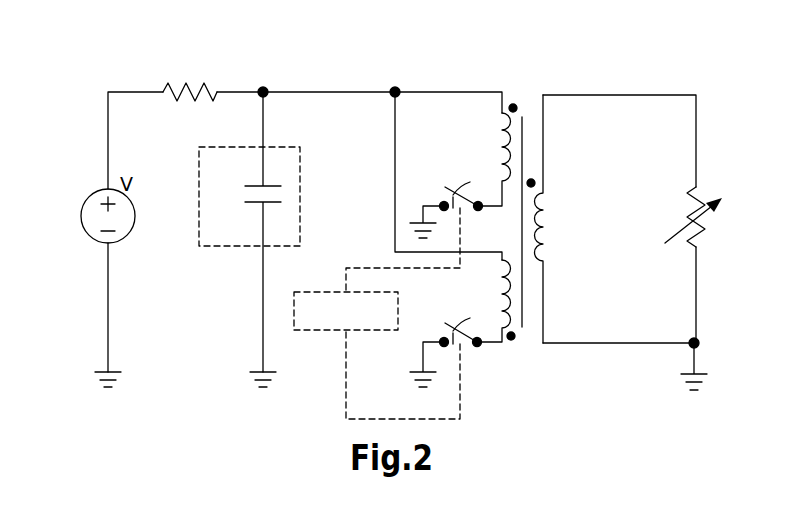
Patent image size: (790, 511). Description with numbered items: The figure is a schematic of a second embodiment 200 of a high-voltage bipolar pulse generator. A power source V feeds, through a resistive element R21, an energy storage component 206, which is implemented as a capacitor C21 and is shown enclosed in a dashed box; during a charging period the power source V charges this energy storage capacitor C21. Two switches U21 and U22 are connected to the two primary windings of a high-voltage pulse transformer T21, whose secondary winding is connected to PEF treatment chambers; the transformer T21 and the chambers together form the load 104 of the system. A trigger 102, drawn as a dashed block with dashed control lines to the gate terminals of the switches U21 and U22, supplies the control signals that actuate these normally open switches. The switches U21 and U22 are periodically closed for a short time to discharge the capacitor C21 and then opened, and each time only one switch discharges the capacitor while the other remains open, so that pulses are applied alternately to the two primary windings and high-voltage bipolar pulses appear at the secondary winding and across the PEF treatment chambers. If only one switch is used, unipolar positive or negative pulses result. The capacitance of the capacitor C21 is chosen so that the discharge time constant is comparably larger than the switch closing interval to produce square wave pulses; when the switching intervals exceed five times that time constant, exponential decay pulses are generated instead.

The second embodiment of high-voltage bipolar pulse generator 200 is at (80, 99).
The energy storage component 206 is at (235, 247).
The trigger 102 is at (305, 330).
The load 104 is at (697, 187).
The resistive element R21 is at (190, 77).
The capacitor C21 is at (247, 239).
The switch U21 is at (451, 198).
The switch U22 is at (451, 340).
The high-voltage pulse transformer T21 is at (565, 180).